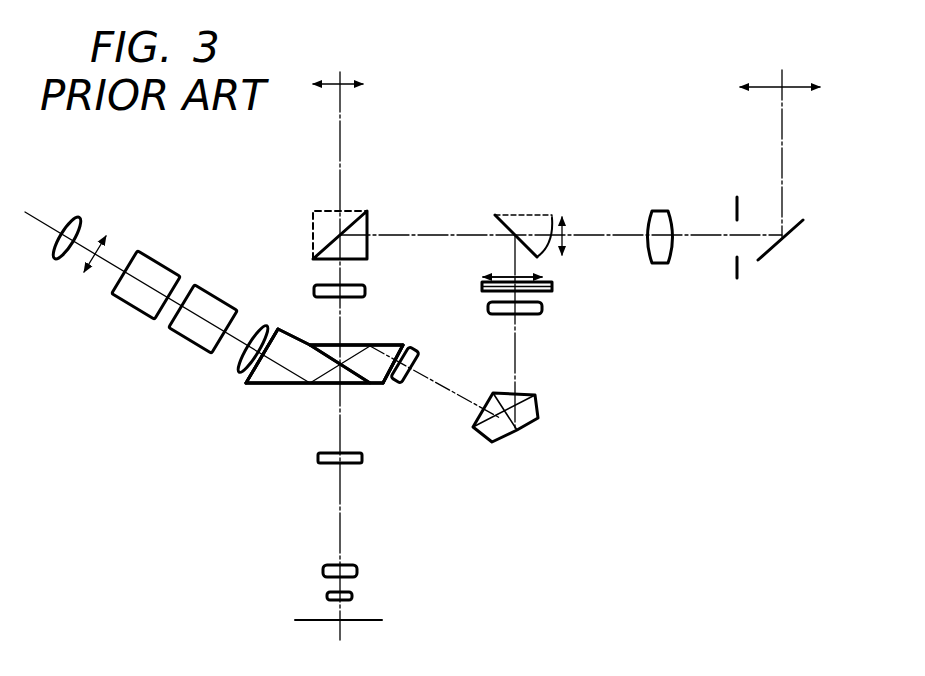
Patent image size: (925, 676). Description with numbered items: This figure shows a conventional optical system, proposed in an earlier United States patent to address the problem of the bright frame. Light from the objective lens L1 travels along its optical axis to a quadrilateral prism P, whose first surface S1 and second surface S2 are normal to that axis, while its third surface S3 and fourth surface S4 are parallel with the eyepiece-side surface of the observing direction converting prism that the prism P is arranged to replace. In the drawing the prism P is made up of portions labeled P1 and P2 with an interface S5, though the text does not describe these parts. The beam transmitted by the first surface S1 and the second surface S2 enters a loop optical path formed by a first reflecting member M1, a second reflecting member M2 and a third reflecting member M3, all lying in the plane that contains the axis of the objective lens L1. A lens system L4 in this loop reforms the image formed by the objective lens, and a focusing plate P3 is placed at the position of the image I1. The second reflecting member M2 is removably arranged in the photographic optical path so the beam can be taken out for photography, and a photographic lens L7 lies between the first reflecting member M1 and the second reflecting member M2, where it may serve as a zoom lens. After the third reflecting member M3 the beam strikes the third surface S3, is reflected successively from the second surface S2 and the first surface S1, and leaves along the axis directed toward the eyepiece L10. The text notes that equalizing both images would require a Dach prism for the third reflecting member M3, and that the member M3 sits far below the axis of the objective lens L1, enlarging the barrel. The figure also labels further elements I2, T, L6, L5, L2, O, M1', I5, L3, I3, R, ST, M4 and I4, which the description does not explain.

The eyepiece L10 is at (79, 217).
The intermediate image I2 is at (102, 241).
The telescope / beam expander blocks T is at (219, 361).
The lens L6 is at (240, 377).
The quadrilateral prism P is at (292, 332).
The first prism part P1 is at (275, 375).
The second prism part P2 is at (393, 345).
The first surface S1 is at (303, 385).
The second surface S2 is at (364, 345).
The third surface S3 is at (388, 380).
The fourth surface S4 is at (252, 376).
The beam splitting interface S5 is at (330, 350).
The lens L5 is at (417, 352).
The third reflecting member M3 is at (525, 430).
The lens L2 is at (363, 458).
The objective lens L1 is at (361, 557).
The object plane O is at (343, 622).
The first reflecting member M1 is at (367, 220).
The alternative mirror position M1' is at (312, 215).
The intermediate image I5 is at (370, 82).
The lens L3 is at (365, 285).
The second reflecting member M2 is at (497, 215).
The intermediate image I3 is at (563, 222).
The image I1 is at (493, 273).
The reticle R is at (547, 270).
The focusing plate P3 is at (553, 287).
The lens system L4 is at (543, 312).
The photographic lens L7 is at (652, 208).
The stop ST is at (733, 208).
The mirror M4 is at (780, 246).
The intermediate image I4 is at (743, 87).